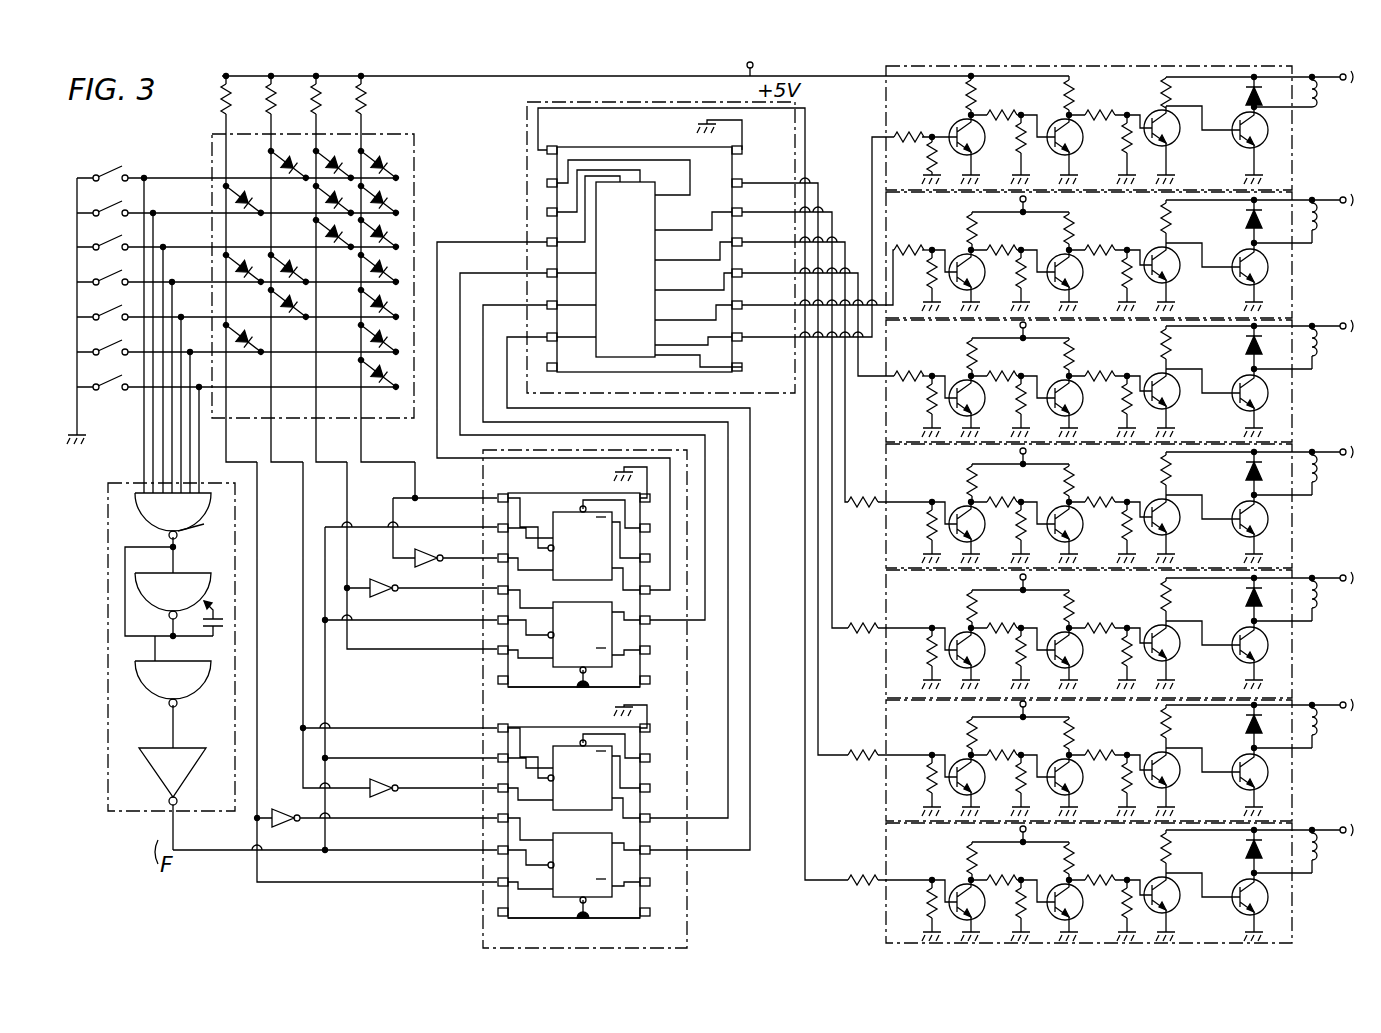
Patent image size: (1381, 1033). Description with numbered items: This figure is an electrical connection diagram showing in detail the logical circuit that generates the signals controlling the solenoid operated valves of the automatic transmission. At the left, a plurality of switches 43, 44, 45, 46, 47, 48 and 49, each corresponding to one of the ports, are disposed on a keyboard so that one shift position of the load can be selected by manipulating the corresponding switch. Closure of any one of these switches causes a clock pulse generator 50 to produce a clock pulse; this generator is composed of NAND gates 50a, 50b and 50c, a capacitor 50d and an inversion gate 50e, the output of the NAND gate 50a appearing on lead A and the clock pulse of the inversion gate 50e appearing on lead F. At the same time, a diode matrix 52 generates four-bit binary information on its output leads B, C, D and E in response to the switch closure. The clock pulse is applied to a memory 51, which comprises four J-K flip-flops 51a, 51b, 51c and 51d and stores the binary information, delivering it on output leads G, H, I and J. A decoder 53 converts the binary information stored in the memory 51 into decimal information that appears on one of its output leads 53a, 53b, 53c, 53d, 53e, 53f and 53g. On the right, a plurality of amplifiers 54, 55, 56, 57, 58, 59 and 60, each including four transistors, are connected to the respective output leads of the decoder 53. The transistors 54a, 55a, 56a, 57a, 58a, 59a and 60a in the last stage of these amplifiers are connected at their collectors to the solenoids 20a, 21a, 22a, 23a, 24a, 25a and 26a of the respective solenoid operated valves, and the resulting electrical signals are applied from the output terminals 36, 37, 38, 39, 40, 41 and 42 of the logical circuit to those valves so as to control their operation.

The switch 43 is at (117, 171).
The switch 44 is at (117, 206).
The switch 45 is at (117, 240).
The switch 46 is at (117, 275).
The switch 47 is at (117, 310).
The switch 48 is at (117, 345).
The switch 49 is at (117, 380).
The clock pulse generator 50 is at (163, 651).
The NAND gate 50a is at (138, 502).
The NAND gate 50b is at (228, 572).
The NAND gate 50c is at (134, 680).
The capacitor 50d is at (202, 650).
The inversion gate 50e is at (142, 772).
The memory 51 is at (490, 490).
The J-K flip-flop 51a is at (556, 510).
The J-K flip-flop 51b is at (557, 672).
The J-K flip-flop 51c is at (582, 742).
The J-K flip-flop 51d is at (576, 906).
The diode matrix 52 is at (420, 140).
The decoder 53 is at (524, 140).
The output lead 53a is at (813, 239).
The output lead 53b is at (813, 279).
The output lead 53c is at (813, 313).
The output lead 53d is at (790, 360).
The output lead 53e is at (790, 408).
The output lead 53f is at (790, 457).
The output lead 53g is at (662, 148).
The amplifier 54 is at (1133, 128).
The amplifier 55 is at (1128, 247).
The amplifier 56 is at (1128, 372).
The amplifier 57 is at (1109, 498).
The amplifier 58 is at (1109, 626).
The amplifier 59 is at (1109, 751).
The amplifier 60 is at (1109, 874).
The transistor 54a is at (1244, 110).
The transistor 55a is at (1244, 243).
The transistor 56a is at (1244, 369).
The transistor 57a is at (1244, 495).
The transistor 58a is at (1244, 621).
The transistor 59a is at (1244, 748).
The transistor 60a is at (1244, 873).
The output terminal 36 is at (1277, 118).
The output terminal 37 is at (1277, 255).
The output terminal 38 is at (1277, 381).
The output terminal 39 is at (1277, 507).
The output terminal 40 is at (1277, 633).
The output terminal 41 is at (1277, 760).
The output terminal 42 is at (1277, 885).
The solenoid 20a is at (1335, 106).
The solenoid 21a is at (1335, 226).
The solenoid 22a is at (1335, 352).
The solenoid 23a is at (1335, 478).
The solenoid 24a is at (1335, 604).
The solenoid 25a is at (1335, 731).
The solenoid 26a is at (1335, 856).